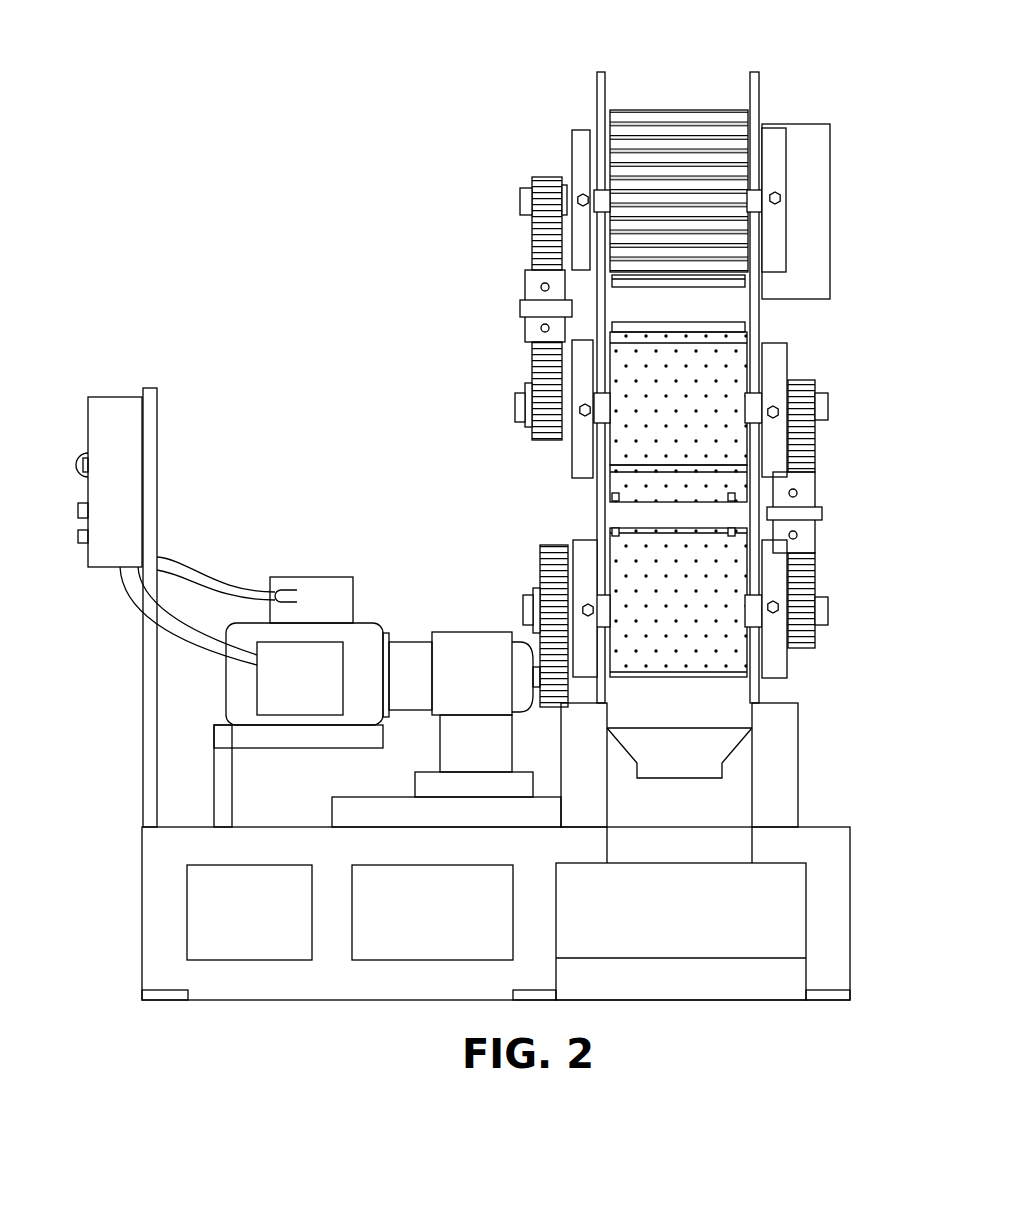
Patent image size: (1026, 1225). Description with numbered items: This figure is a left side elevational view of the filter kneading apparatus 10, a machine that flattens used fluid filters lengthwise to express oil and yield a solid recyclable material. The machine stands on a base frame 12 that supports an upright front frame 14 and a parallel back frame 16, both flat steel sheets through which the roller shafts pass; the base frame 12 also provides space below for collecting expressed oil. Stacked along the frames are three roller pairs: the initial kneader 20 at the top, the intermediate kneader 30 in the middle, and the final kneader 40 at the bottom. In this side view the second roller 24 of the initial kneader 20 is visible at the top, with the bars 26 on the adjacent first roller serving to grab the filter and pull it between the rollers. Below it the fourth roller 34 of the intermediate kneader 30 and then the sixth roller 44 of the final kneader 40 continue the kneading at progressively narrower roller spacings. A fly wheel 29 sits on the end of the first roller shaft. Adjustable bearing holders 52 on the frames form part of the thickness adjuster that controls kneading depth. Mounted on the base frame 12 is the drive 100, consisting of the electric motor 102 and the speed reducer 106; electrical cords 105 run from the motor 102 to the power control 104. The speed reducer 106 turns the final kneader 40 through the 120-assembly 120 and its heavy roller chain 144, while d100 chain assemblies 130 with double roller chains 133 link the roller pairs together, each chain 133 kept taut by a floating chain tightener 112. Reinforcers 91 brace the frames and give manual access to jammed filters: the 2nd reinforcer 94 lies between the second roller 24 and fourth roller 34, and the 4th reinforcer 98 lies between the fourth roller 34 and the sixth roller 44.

The filter kneading apparatus 10 is at (250, 83).
The base frame 12 is at (842, 928).
The front frame 14 is at (753, 72).
The back frame 16 is at (599, 72).
The initial kneader 20 is at (852, 210).
The second roller 24 is at (673, 138).
The bar 26 is at (632, 463).
The fly wheel 29 is at (816, 165).
The intermediate kneader 30 is at (857, 417).
The fourth roller 34 is at (732, 368).
The final kneader 40 is at (855, 605).
The sixth roller 44 is at (727, 657).
The adjustable bearing holder 52 is at (580, 143).
The reinforcer 91 is at (785, 325).
The 2nd reinforcer 94 is at (733, 298).
The 4th reinforcer 98 is at (617, 515).
The drive 100 is at (260, 403).
The electric motor 102 is at (313, 588).
The power control 104 is at (113, 413).
The electrical cords 105 is at (198, 587).
The speed reducer 106 is at (472, 647).
The floating chain tightener 112 is at (533, 280).
The 120-assembly 120 is at (512, 598).
The d100 chain assembly 130 is at (438, 235).
The d100 double roller chain 133 is at (547, 187).
The 120 heavy roller chain 144 is at (555, 582).